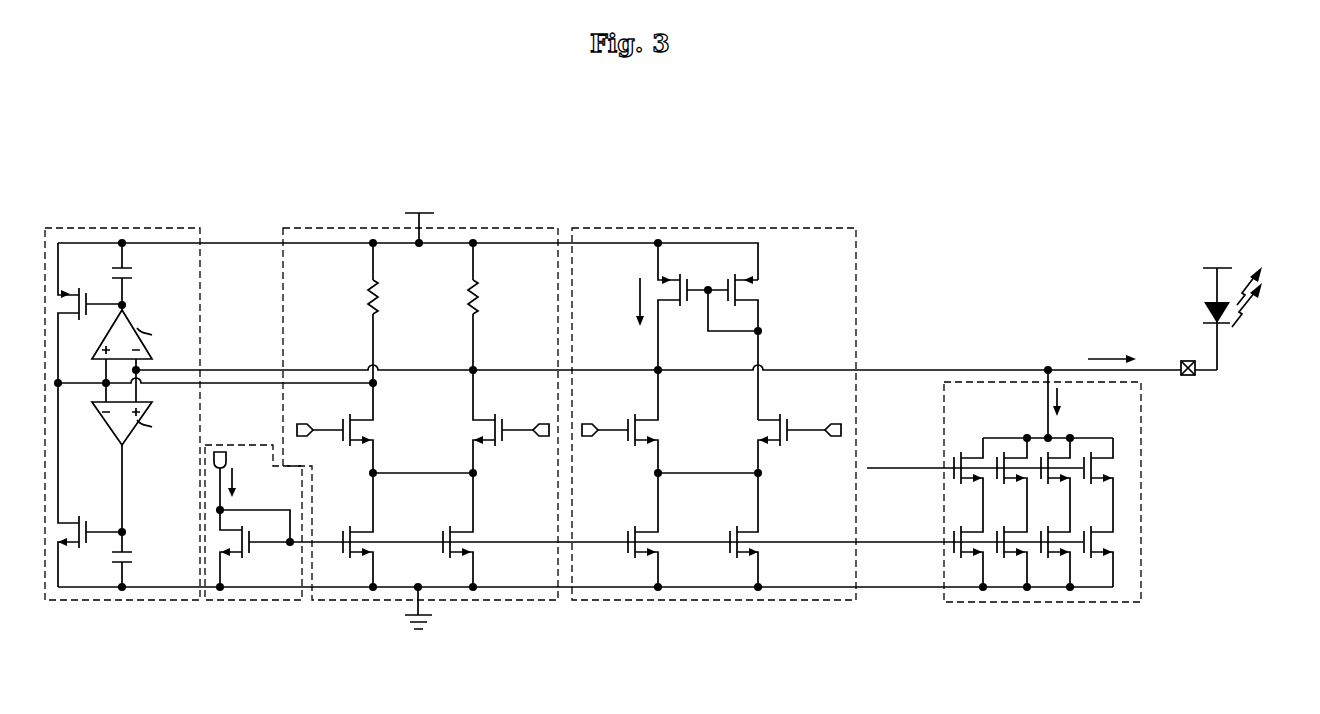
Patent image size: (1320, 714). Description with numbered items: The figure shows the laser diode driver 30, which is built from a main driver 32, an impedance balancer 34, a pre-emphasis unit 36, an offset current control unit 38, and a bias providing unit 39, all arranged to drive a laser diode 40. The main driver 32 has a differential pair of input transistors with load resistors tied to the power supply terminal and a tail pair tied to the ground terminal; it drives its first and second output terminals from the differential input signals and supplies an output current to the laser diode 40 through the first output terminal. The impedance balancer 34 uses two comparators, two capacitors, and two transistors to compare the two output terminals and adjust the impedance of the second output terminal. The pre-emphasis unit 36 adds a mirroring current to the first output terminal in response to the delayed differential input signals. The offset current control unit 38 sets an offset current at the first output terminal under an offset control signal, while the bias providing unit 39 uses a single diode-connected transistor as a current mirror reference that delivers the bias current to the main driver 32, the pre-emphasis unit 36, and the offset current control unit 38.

The laser diode driver 30 is at (1018, 109).
The main driver 32 is at (493, 227).
The impedance balancer 34 is at (138, 227).
The pre-emphasis unit 36 is at (793, 227).
The offset current control unit 38 is at (1141, 498).
The bias providing unit 39 is at (253, 602).
The laser diode 40 is at (1200, 316).